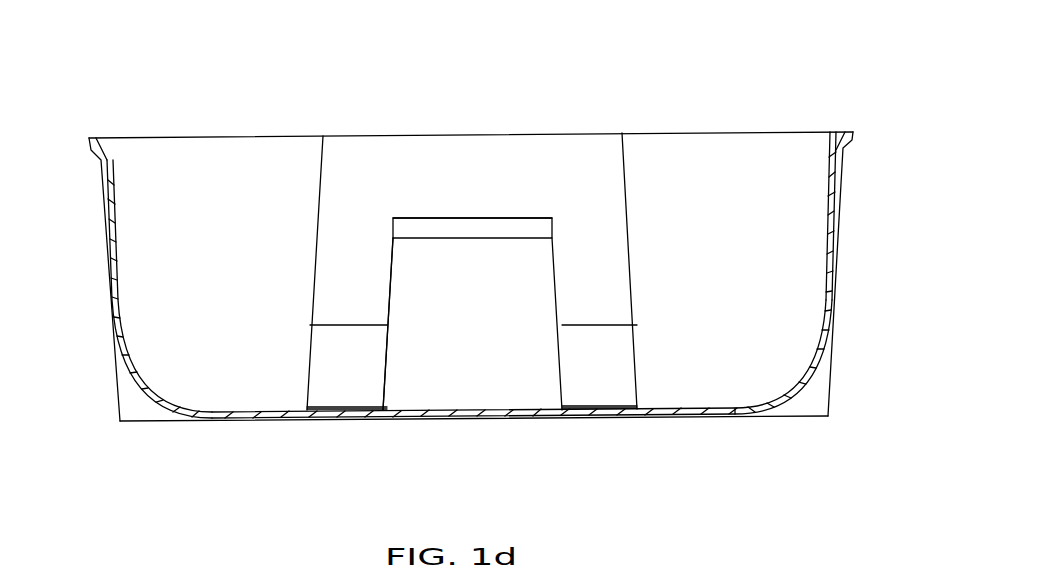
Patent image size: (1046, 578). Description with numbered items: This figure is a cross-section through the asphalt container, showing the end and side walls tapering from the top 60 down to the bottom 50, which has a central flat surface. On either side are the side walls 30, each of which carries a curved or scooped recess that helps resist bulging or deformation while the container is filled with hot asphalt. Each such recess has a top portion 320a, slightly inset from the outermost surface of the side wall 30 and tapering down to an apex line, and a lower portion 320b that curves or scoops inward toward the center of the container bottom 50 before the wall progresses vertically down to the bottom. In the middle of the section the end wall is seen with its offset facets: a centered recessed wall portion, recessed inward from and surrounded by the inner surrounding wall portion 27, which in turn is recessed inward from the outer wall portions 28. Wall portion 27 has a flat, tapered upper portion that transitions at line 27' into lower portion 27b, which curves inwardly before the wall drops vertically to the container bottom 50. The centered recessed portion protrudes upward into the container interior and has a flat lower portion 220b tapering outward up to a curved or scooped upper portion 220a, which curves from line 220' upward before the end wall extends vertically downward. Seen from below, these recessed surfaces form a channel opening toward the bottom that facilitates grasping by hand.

The inner surrounding wall portion 27 is at (472, 242).
The transition line 27' is at (628, 304).
The lower portion 27b is at (335, 383).
The outer wall portions 28 is at (802, 160).
The side walls 30 is at (107, 247).
The container bottom 50 is at (497, 420).
The top 60 is at (748, 132).
The line 220' is at (359, 304).
The curved upper portion 220a is at (495, 228).
The flat lower portion 220b is at (453, 355).
The top portion 320a is at (840, 218).
The lower portion 320b is at (806, 378).